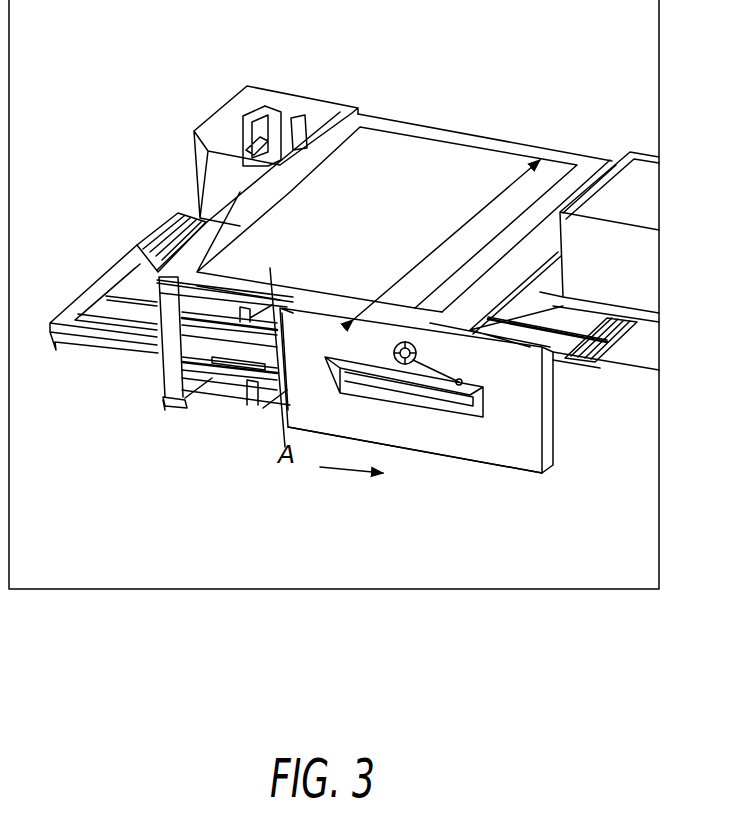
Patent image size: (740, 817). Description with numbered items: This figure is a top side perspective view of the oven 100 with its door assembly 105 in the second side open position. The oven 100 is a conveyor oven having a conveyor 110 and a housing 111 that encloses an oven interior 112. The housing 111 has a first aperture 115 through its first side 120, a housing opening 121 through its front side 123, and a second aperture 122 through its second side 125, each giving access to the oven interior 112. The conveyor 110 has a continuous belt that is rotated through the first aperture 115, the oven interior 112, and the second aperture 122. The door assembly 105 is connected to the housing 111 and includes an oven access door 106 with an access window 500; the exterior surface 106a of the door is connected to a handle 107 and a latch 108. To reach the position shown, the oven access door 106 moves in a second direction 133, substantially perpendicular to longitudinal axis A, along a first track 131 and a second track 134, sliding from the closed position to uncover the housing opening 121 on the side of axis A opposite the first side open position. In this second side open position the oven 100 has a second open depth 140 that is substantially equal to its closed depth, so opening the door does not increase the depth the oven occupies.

The oven 100 is at (594, 145).
The door assembly 105 is at (325, 443).
The oven access door 106 is at (537, 452).
The exterior surface 106a is at (463, 383).
The handle 107 is at (487, 392).
The latch 108 is at (458, 384).
The conveyor 110 is at (565, 368).
The housing 111 is at (393, 153).
The oven interior 112 is at (215, 402).
The first aperture 115 is at (182, 402).
The first side 120 is at (173, 248).
The housing opening 121 is at (245, 405).
The second aperture 122 is at (550, 280).
The front side 123 is at (163, 402).
The second side 125 is at (530, 250).
The first track 131 is at (162, 398).
The second direction 133 is at (351, 458).
The second track 134 is at (157, 275).
The second open depth 140 is at (503, 190).
The access window 500 is at (403, 400).